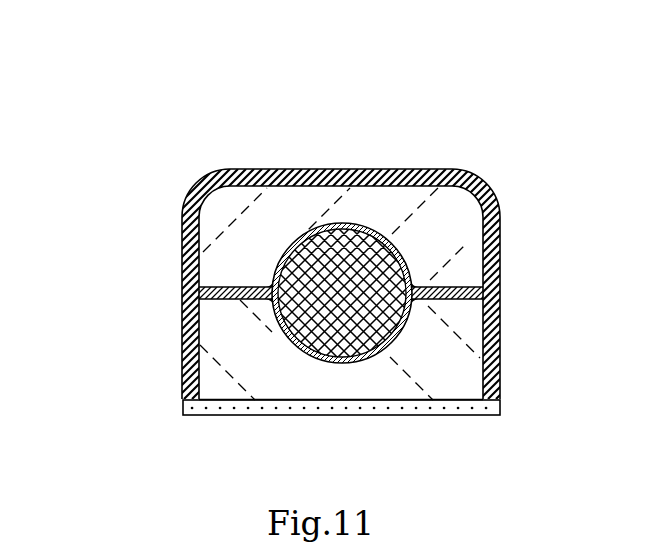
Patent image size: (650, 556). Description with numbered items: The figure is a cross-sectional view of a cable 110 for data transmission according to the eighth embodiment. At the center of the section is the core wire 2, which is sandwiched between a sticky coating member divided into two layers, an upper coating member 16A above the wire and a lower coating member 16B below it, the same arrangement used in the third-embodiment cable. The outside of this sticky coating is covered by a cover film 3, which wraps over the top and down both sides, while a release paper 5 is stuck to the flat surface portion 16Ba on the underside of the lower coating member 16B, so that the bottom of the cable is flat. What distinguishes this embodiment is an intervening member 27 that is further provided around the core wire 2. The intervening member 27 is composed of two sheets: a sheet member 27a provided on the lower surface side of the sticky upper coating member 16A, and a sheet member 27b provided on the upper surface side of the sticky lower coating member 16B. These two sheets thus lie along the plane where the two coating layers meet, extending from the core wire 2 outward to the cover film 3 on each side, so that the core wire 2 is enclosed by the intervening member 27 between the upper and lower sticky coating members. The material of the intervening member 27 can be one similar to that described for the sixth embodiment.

The cable 110 is at (462, 100).
The core wire 2 is at (330, 230).
The cover film 3 is at (480, 178).
The release paper 5 is at (493, 403).
The upper coating member 16A is at (453, 238).
The lower coating member 16B is at (453, 323).
The flat surface portion 16Ba is at (210, 417).
The intervening member 27 is at (80, 245).
The sheet member 27a is at (270, 272).
The sheet member 27b is at (270, 335).